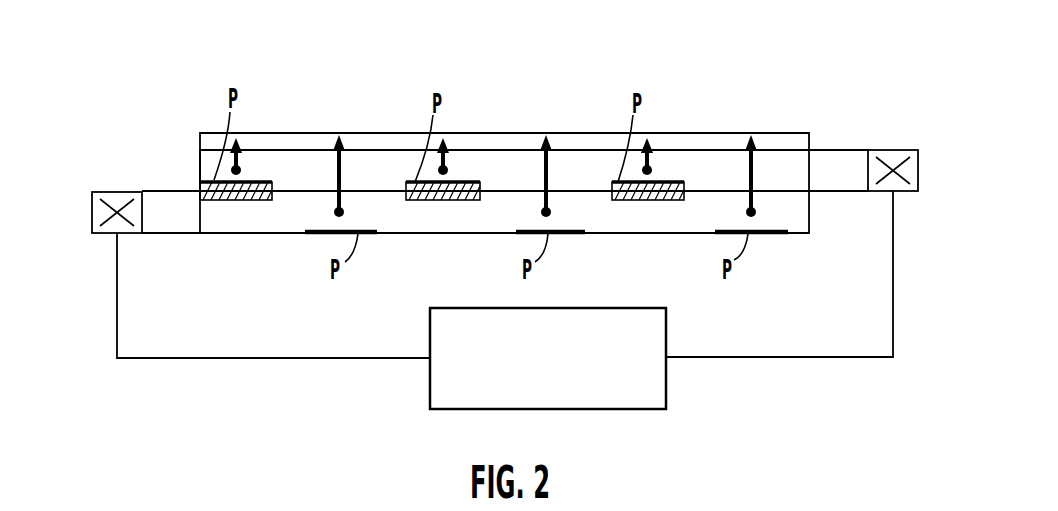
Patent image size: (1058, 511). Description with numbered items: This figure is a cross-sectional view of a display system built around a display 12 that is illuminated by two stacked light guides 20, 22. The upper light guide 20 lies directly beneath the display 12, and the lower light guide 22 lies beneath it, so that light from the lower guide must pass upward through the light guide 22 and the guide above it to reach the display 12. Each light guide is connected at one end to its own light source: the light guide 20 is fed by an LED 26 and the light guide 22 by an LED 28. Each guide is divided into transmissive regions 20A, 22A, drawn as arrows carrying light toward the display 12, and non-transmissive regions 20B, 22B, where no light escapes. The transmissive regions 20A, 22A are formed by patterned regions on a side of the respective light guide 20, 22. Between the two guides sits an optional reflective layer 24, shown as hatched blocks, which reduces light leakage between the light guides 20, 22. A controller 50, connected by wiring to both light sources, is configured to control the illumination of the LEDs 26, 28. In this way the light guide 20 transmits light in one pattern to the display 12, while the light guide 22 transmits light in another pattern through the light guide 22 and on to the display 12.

The display 12 is at (203, 143).
The light guide 20 is at (205, 172).
The transmissive region 20A is at (240, 140).
The non-transmissive region 20B is at (322, 99).
The light guide 22 is at (157, 223).
The transmissive region 22A is at (345, 138).
The non-transmissive region 22B is at (258, 242).
The reflective layer 24 is at (225, 202).
The LED 26 is at (893, 150).
The LED 28 is at (92, 214).
The controller 50 is at (559, 381).